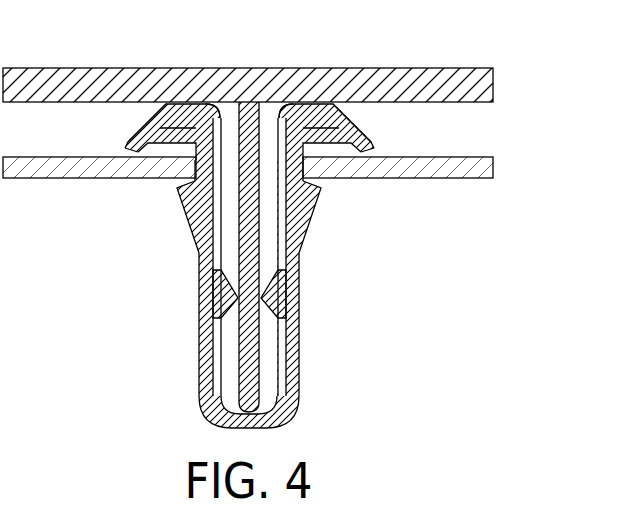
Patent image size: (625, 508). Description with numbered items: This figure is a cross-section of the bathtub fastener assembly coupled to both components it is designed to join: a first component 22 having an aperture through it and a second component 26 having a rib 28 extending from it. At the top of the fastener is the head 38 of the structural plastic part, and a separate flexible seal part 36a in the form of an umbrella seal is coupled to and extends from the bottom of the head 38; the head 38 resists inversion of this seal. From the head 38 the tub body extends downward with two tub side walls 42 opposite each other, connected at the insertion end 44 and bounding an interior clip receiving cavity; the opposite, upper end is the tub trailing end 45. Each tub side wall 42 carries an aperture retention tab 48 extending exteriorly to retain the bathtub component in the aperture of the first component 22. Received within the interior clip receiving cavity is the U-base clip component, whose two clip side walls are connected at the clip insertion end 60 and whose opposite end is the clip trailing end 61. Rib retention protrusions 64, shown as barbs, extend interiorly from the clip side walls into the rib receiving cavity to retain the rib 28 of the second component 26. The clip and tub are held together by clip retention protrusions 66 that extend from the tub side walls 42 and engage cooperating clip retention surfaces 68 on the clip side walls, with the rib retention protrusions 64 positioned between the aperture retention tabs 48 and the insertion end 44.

The first component 22 is at (70, 172).
The second component 26 is at (470, 80).
The rib 28 is at (248, 101).
The separate flexible seal part 36a is at (130, 146).
The head 38 is at (362, 126).
The tub side walls 42 is at (207, 276).
The insertion end 44 is at (252, 427).
The tub trailing end 45 is at (157, 110).
The aperture retention tab 48 is at (180, 201).
The clip insertion end 60 is at (222, 425).
The clip trailing end 61 is at (187, 101).
The rib retention protrusions 64 is at (214, 311).
The clip retention protrusions 66 is at (206, 243).
The clip retention surfaces 68 is at (197, 246).